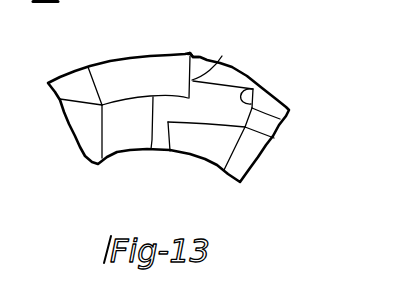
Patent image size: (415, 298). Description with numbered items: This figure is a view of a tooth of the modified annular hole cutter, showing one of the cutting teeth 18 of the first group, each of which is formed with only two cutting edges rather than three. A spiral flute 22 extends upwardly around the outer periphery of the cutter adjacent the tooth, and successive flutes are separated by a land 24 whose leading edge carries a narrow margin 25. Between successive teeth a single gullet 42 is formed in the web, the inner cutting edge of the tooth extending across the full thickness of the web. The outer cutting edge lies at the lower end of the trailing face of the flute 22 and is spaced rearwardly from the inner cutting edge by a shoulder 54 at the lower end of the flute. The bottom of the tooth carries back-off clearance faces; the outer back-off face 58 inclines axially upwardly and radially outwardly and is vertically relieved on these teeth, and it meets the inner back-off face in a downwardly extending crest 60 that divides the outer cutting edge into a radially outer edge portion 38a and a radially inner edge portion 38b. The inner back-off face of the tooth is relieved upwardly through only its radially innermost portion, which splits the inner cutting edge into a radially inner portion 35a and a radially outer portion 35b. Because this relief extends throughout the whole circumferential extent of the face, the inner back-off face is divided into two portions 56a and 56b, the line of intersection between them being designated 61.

The cutting teeth of the first group 18 is at (203, 58).
The spiral flute 22 is at (118, 69).
The land 24 is at (241, 78).
The margin 25 is at (191, 53).
The radially inner portion of inner cutting edge 35a is at (153, 139).
The radially outer portion of inner cutting edge 35b is at (153, 107).
The radially outer edge portion of outer cutting edge 38a is at (222, 56).
The radially inner edge portion of outer cutting edge 38b is at (202, 99).
The gullet 42 is at (113, 144).
The shoulder 54 is at (152, 97).
The first portion of inner back-off face 56a is at (280, 119).
The second portion of inner back-off face 56b is at (213, 156).
The outer back-off face 58 is at (246, 81).
The crest 60 is at (247, 104).
The line of intersection 61 is at (169, 152).